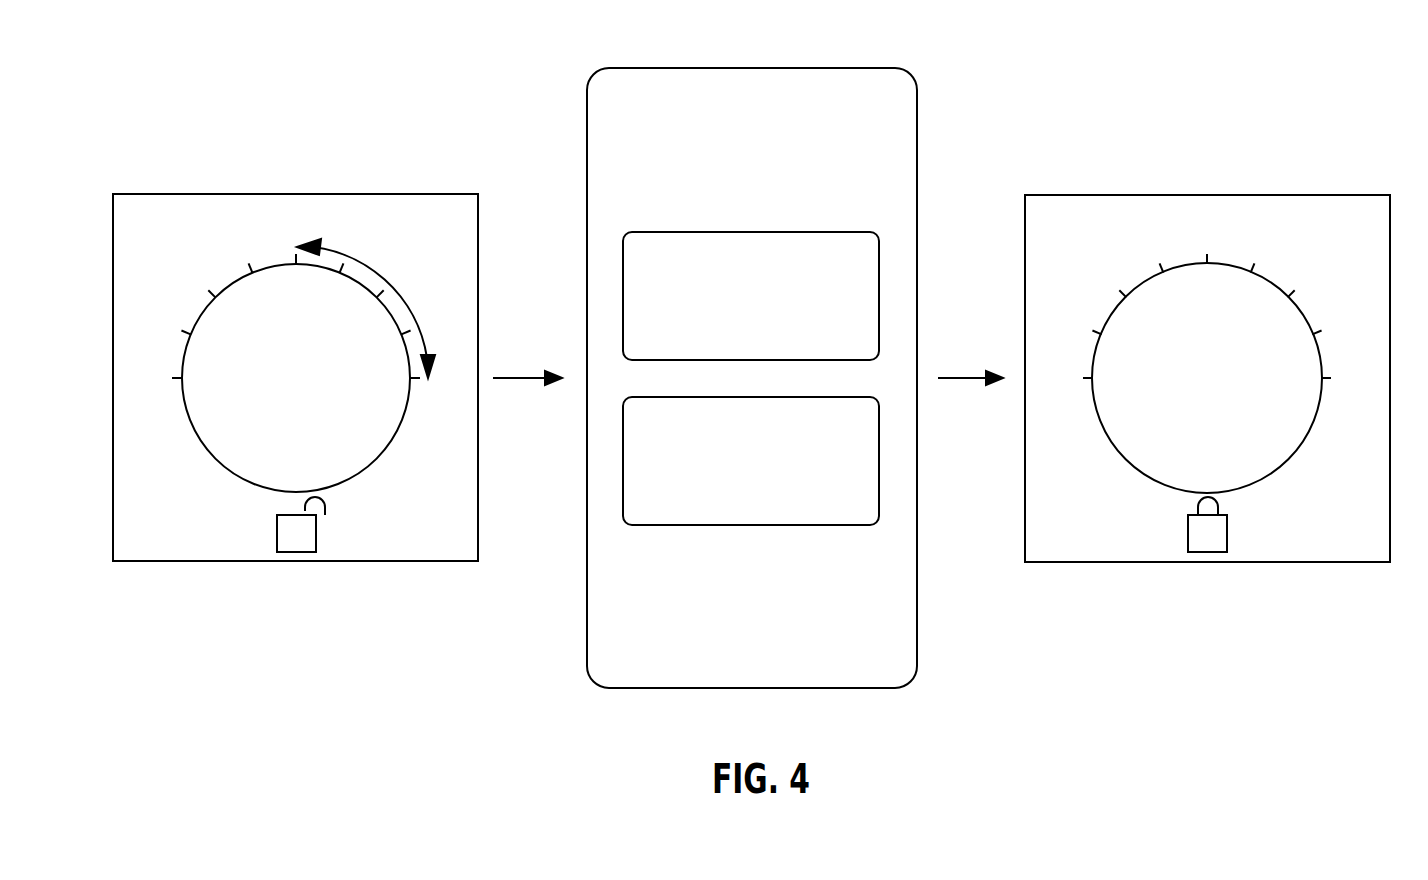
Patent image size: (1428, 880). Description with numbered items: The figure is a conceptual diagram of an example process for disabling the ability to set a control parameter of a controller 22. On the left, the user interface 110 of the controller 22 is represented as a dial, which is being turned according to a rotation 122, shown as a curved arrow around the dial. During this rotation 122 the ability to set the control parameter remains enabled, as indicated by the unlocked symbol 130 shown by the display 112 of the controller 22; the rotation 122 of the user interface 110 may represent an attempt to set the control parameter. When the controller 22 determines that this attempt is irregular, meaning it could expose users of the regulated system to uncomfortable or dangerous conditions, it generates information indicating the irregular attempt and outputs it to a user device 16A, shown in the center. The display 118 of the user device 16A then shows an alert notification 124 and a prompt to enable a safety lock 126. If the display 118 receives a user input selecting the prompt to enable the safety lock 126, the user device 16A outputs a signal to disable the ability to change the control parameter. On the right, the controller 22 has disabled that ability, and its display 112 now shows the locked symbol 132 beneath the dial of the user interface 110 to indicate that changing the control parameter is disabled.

The controller 22 is at (333, 194).
The user interface 110 is at (245, 277).
The display 112 is at (220, 212).
The rotation 122 is at (358, 261).
The unlocked symbol 130 is at (290, 514).
The locked symbol 132 is at (1196, 514).
The user device 16A is at (805, 68).
The display 118 is at (705, 78).
The alert notification 124 is at (771, 232).
The prompt to enable a safety lock 126 is at (771, 397).